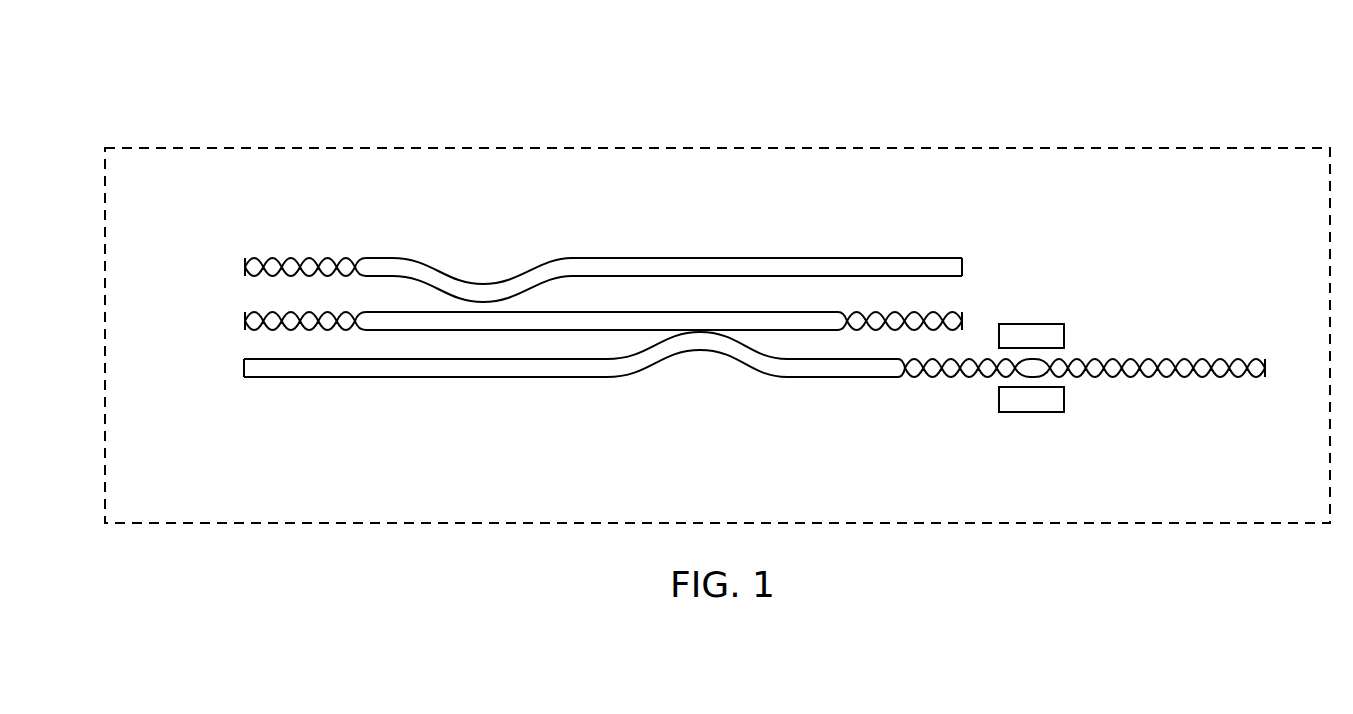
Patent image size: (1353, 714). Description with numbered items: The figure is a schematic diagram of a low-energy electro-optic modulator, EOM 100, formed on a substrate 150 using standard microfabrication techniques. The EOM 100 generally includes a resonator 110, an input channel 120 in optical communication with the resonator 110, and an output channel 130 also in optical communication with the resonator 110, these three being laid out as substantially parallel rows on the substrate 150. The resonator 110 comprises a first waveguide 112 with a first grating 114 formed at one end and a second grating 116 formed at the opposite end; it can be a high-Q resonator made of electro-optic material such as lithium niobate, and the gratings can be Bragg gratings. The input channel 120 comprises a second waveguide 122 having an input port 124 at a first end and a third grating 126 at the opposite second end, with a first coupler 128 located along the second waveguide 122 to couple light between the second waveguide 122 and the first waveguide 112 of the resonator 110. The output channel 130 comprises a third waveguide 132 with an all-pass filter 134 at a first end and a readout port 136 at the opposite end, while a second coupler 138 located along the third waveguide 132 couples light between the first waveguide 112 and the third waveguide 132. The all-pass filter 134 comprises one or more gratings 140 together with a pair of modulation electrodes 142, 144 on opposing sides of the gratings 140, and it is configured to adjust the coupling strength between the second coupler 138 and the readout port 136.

The electro-optic modulator 100 is at (251, 111).
The resonator 110 is at (556, 366).
The first waveguide 112 is at (510, 331).
The first grating 114 is at (876, 331).
The second grating 116 is at (350, 331).
The input channel 120 is at (598, 250).
The second waveguide 122 is at (658, 250).
The input port 124 is at (963, 267).
The third grating 126 is at (330, 257).
The first coupler 128 is at (483, 283).
The output channel 130 is at (712, 398).
The third waveguide 132 is at (602, 387).
The all-pass filter 134 is at (971, 395).
The readout port 136 is at (243, 367).
The second coupler 138 is at (700, 351).
The gratings 140 is at (1197, 379).
The modulation electrode 142 is at (1065, 336).
The modulation electrode 144 is at (1030, 413).
The substrate 150 is at (1320, 186).